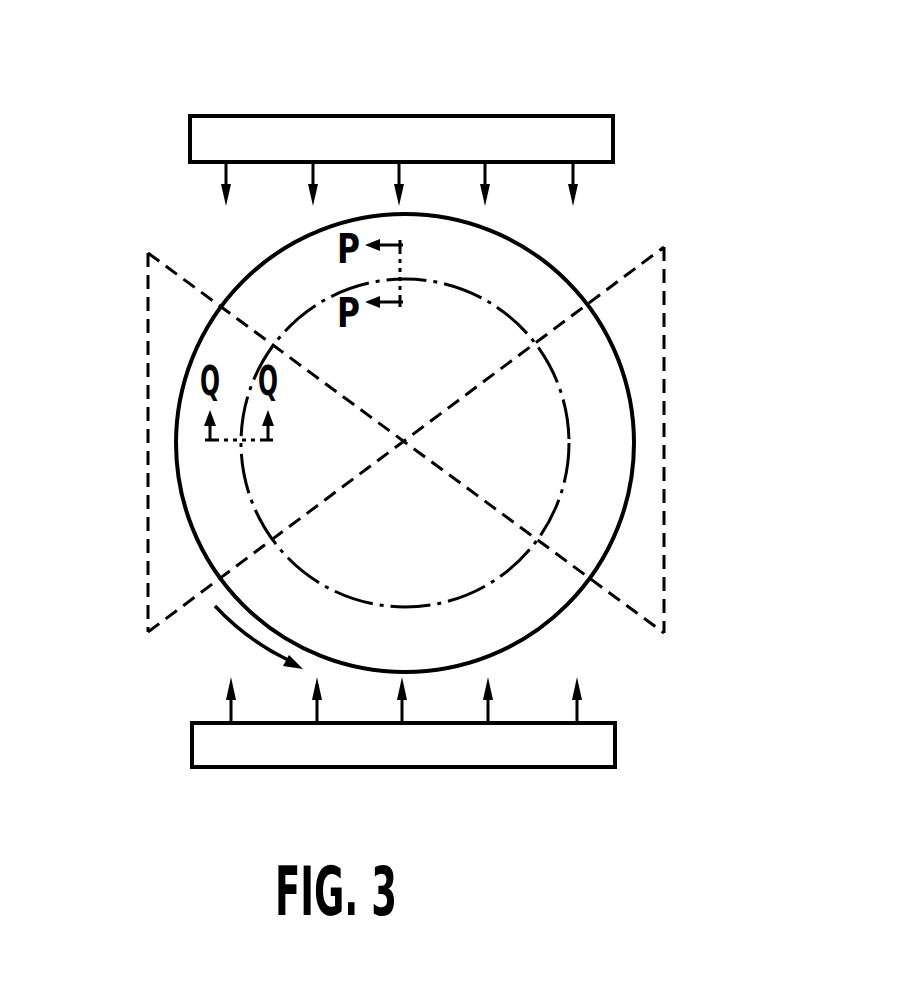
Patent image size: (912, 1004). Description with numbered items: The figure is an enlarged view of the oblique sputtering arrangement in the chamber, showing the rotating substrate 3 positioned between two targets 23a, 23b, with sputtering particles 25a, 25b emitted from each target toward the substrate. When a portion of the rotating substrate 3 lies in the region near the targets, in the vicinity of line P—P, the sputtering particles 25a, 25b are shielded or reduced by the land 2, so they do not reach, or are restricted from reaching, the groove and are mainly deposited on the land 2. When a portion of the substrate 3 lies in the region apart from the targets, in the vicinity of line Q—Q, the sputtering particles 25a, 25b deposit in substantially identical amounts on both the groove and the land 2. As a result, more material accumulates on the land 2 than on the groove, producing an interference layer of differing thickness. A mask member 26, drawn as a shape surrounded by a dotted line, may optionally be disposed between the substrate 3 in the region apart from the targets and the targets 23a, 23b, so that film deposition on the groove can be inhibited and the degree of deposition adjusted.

The land 2 is at (512, 568).
The substrate 3 is at (568, 280).
The target 23a is at (512, 138).
The target 23b is at (508, 751).
The sputtering particles 25a is at (224, 176).
The sputtering particles 25b is at (226, 707).
The mask member 26 is at (146, 340).